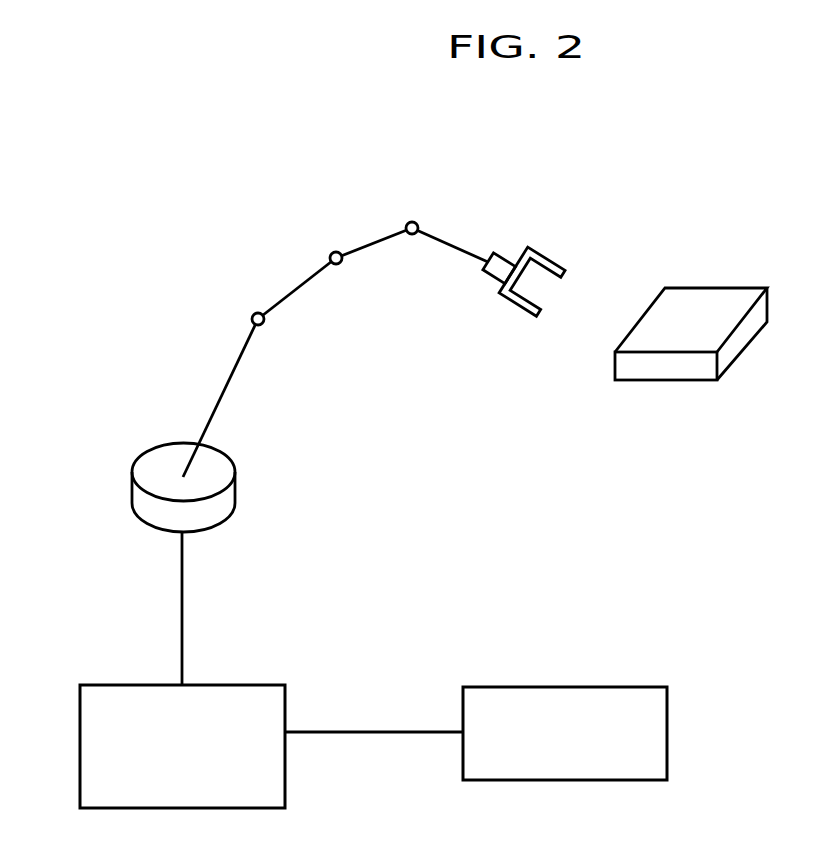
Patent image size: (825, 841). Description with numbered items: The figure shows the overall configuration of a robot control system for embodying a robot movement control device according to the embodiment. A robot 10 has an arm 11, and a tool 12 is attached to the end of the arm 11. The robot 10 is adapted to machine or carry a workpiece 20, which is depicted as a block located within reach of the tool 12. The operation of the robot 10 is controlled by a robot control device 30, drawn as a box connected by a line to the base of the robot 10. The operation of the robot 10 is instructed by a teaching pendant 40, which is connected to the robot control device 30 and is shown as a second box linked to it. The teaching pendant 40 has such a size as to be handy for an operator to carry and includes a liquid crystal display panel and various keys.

The robot 10 is at (348, 327).
The arm 11 is at (361, 240).
The tool 12 is at (520, 306).
The workpiece 20 is at (717, 287).
The robot control device 30 is at (230, 685).
The teaching pendant 40 is at (583, 687).